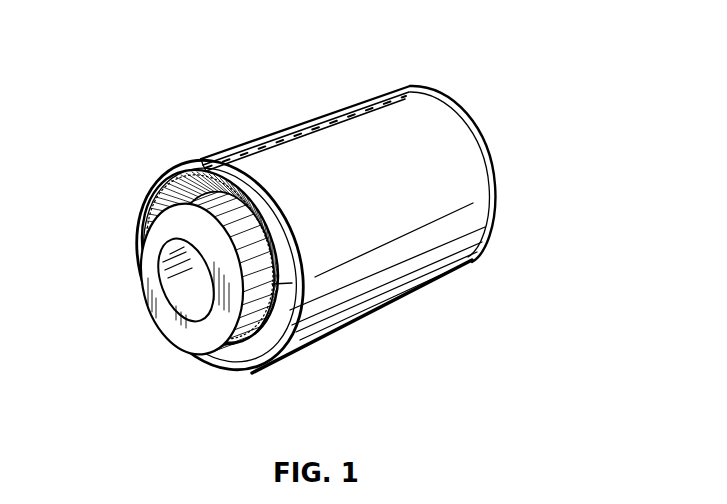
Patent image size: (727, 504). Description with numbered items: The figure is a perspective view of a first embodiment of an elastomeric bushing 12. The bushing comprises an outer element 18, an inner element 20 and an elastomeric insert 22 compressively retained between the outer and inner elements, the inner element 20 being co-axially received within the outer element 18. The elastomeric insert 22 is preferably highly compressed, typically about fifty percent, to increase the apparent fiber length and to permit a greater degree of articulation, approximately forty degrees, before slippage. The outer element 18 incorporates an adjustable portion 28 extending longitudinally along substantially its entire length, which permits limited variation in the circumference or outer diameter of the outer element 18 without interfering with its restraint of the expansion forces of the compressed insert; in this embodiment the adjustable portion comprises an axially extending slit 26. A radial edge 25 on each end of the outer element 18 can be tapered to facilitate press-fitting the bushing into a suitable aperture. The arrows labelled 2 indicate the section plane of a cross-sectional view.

The elastomeric bushing 12 is at (522, 212).
The outer element 18 is at (437, 278).
The inner element 20 is at (172, 323).
The elastomeric insert 22 is at (223, 360).
The radial edge 25 is at (193, 158).
The axially extending slit 26 is at (253, 150).
The adjustable portion 28 is at (379, 89).
The section line 2- 2 is at (312, 103).